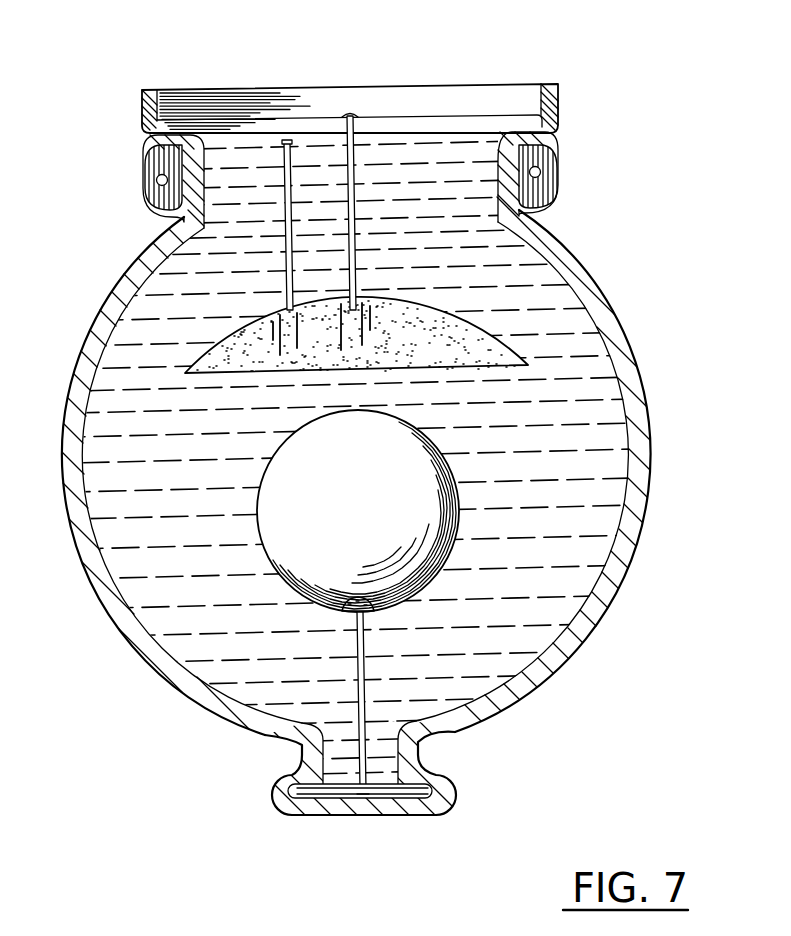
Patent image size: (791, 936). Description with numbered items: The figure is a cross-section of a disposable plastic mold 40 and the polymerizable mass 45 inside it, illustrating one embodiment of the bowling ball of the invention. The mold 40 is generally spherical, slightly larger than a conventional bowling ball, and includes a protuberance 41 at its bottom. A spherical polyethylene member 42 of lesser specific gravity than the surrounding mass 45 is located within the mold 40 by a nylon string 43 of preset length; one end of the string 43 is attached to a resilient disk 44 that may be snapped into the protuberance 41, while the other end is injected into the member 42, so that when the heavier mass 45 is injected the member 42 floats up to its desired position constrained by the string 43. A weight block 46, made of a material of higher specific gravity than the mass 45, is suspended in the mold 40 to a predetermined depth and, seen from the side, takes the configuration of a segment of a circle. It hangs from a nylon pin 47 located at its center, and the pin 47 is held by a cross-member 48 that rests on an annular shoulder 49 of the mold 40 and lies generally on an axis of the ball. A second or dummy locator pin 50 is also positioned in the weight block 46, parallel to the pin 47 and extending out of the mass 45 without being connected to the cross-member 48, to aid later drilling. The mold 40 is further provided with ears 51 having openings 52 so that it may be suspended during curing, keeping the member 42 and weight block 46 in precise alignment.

The mold 40 is at (632, 323).
The protuberance 41 is at (373, 812).
The member 42 is at (280, 543).
The nylon string 43 is at (357, 688).
The resilient disk 44 is at (327, 790).
The polymerizable mass 45 is at (553, 523).
The weight block 46 is at (455, 347).
The nylon pin 47 is at (357, 160).
The cross-member 48 is at (413, 125).
The annular shoulder 49 is at (150, 143).
The locator pin 50 is at (292, 153).
The ears 51 is at (170, 206).
The openings 52 is at (160, 180).